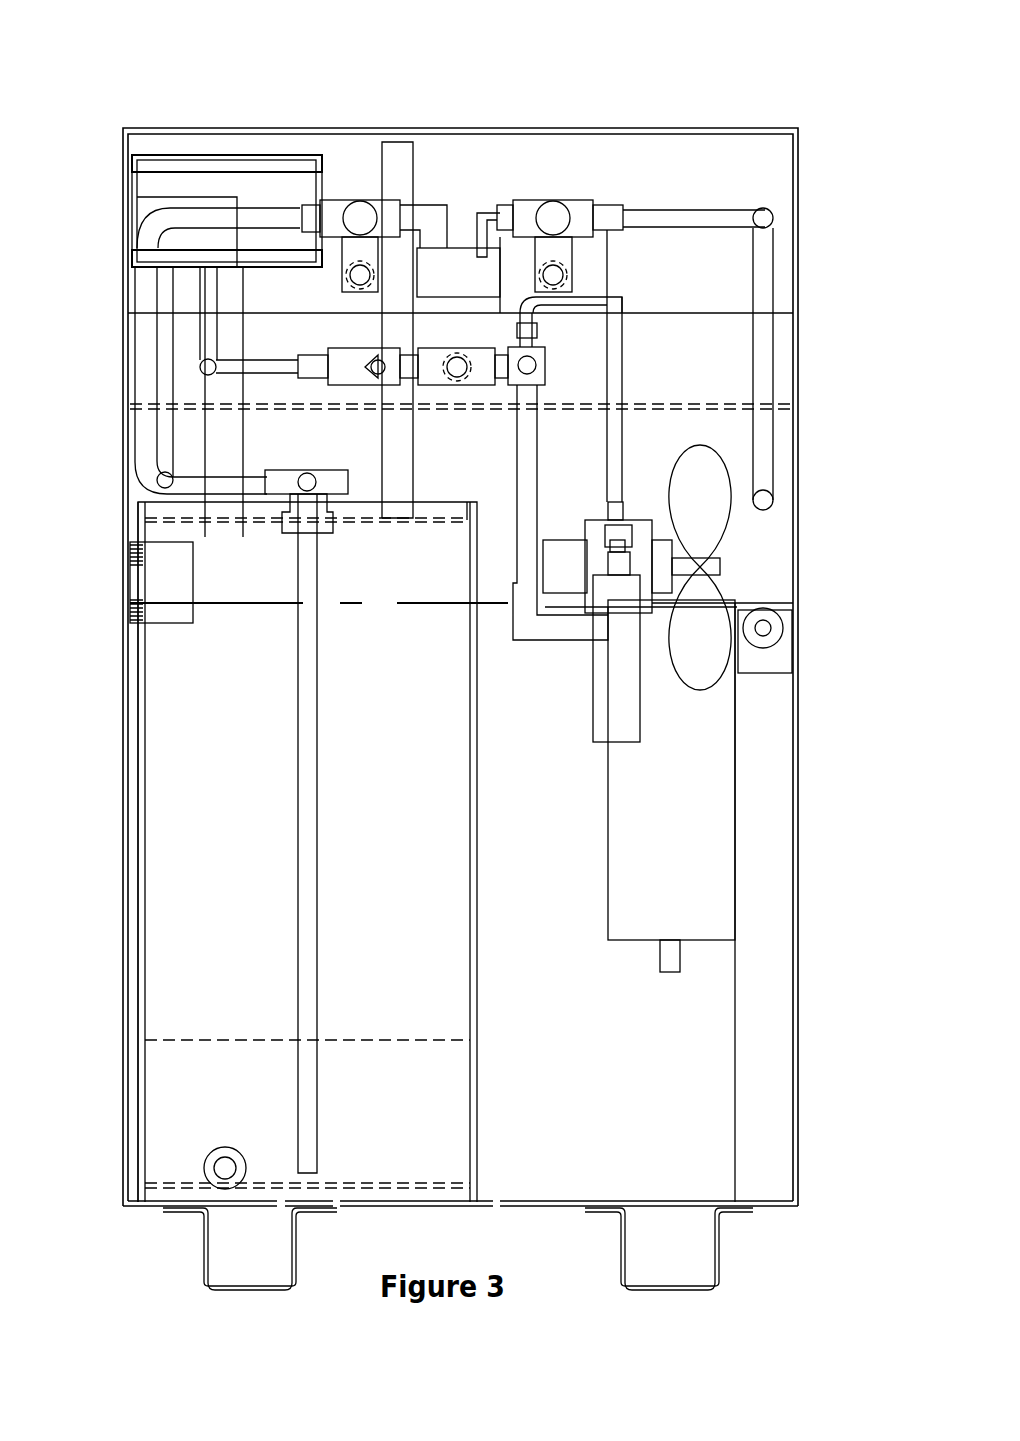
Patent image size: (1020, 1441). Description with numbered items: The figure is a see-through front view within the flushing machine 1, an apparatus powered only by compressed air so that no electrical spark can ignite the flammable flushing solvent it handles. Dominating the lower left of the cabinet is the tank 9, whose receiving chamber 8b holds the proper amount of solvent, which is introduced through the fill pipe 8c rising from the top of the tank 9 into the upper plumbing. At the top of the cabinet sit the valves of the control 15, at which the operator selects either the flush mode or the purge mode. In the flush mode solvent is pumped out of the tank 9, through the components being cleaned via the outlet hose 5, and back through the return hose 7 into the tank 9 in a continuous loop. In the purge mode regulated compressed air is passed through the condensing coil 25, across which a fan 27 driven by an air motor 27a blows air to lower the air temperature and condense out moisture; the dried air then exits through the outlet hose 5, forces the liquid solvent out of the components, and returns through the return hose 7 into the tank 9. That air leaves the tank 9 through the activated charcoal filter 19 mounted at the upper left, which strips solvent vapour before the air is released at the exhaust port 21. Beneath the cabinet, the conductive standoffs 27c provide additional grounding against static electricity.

The machine 1 is at (855, 73).
The activated charcoal filter 19 is at (143, 153).
The fill pipe 8c is at (389, 142).
The control 15 is at (362, 215).
The return hose 7 is at (375, 272).
The outlet hose 5 is at (557, 272).
The exhaust port 21 is at (215, 393).
The receiving chamber 8b is at (183, 813).
The tank 9 is at (138, 942).
The air motor 27a is at (640, 530).
The fan 27 is at (713, 490).
The condensing coil 25 is at (778, 662).
The conductive standoffs 27c is at (715, 1262).